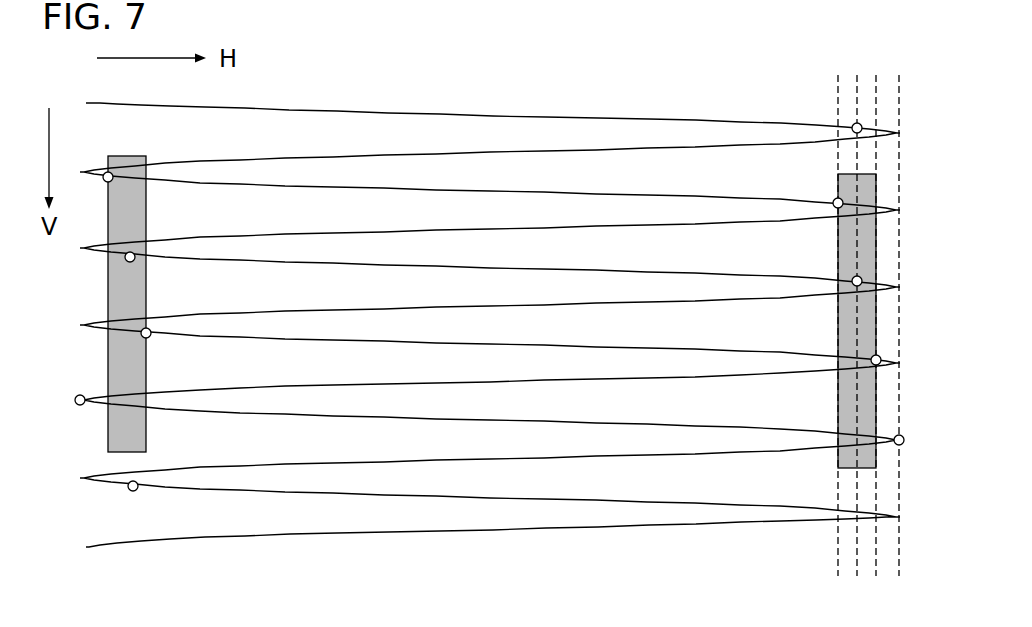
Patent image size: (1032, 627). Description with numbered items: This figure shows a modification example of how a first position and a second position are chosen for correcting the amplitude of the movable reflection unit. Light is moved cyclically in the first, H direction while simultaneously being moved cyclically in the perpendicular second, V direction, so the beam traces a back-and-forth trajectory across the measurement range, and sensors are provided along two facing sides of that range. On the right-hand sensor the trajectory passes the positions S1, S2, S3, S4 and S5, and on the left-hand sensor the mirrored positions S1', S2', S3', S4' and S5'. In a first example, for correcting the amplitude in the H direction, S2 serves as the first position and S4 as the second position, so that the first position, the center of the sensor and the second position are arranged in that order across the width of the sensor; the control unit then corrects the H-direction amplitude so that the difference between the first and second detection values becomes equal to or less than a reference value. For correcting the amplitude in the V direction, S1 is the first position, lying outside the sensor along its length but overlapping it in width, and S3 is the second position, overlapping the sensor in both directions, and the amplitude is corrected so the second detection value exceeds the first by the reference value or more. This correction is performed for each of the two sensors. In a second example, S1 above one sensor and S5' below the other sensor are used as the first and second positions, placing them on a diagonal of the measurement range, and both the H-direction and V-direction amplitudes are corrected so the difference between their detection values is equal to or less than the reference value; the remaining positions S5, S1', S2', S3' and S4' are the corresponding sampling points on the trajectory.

The first position S1 is at (811, 107).
The first position S2 is at (802, 184).
The second position S3 is at (811, 259).
The second position S4 is at (821, 338).
The sampling point S5 on scan trajectory S5 is at (832, 418).
The shifted sampling point S1' is at (164, 202).
The shifted sampling point S2' is at (175, 280).
The shifted sampling point S3' is at (183, 352).
The shifted sampling point S4' is at (150, 423).
The second position S5' is at (177, 507).